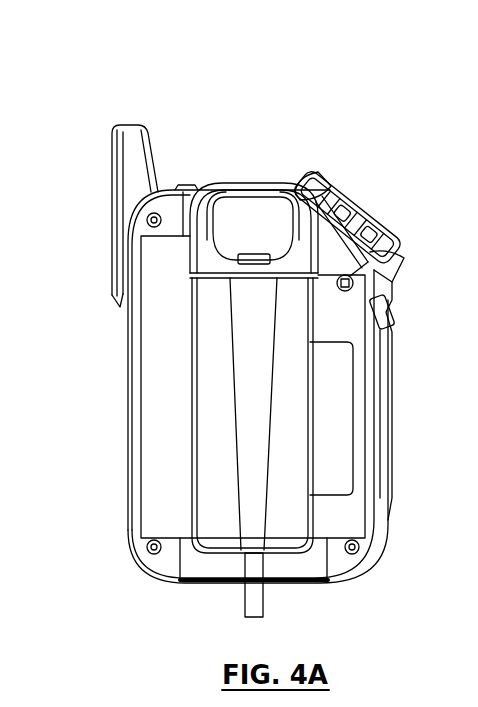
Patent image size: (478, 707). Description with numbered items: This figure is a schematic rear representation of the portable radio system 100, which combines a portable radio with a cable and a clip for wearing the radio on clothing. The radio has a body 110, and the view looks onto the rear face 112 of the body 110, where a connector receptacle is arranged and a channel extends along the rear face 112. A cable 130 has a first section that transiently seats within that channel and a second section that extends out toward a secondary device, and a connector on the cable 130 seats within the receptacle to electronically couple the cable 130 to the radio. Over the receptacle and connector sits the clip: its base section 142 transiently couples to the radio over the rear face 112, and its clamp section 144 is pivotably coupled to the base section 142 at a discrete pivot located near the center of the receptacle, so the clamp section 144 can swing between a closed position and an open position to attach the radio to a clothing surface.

The portable radio system 100 is at (352, 110).
The body 110 is at (134, 338).
The rear face 112 is at (157, 488).
The cable 130 is at (246, 598).
The base section 142 is at (212, 260).
The clamp section 144 is at (202, 387).